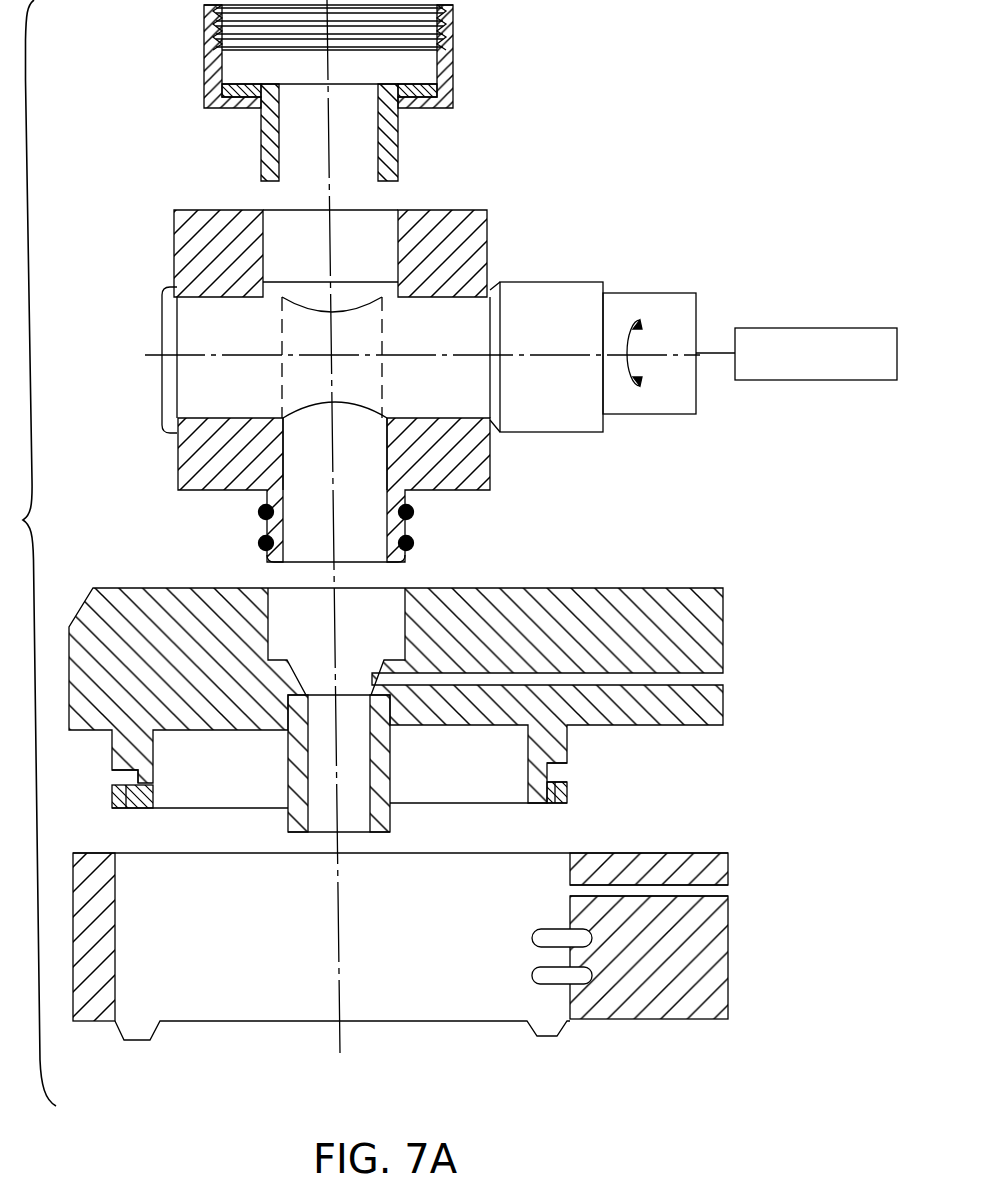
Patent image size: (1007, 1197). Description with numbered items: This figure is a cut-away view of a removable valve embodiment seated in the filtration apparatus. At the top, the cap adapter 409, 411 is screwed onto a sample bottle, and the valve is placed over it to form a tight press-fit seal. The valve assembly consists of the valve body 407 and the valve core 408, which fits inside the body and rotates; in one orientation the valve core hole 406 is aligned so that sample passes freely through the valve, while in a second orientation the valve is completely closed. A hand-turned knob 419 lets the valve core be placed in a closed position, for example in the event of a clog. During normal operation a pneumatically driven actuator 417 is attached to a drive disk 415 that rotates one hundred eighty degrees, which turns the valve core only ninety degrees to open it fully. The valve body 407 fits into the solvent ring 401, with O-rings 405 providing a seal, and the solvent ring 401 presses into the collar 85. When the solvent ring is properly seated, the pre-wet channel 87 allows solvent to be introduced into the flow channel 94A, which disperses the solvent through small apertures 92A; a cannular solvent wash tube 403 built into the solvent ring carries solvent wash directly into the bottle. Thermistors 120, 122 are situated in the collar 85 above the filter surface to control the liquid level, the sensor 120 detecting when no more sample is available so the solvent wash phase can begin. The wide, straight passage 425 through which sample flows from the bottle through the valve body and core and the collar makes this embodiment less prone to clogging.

The cap adapter 411 is at (453, 72).
The cap adapter 409 is at (398, 153).
The valve body 407 is at (177, 464).
The knob 419 is at (163, 329).
The valve core hole 406 is at (368, 384).
The passage 425 is at (368, 458).
The O-rings 405 is at (257, 543).
The valve core 408 is at (544, 297).
The drive disk 415 is at (646, 292).
The actuator 417 is at (778, 328).
The solvent ring 401 is at (702, 587).
The solvent wash tube 403 is at (572, 682).
The flow channel 94A is at (136, 776).
The small apertures 92A is at (127, 809).
The collar 85 is at (668, 1019).
The pre-wet channel 87 is at (728, 890).
The thermistor 122 is at (546, 929).
The thermistor 120 is at (540, 985).